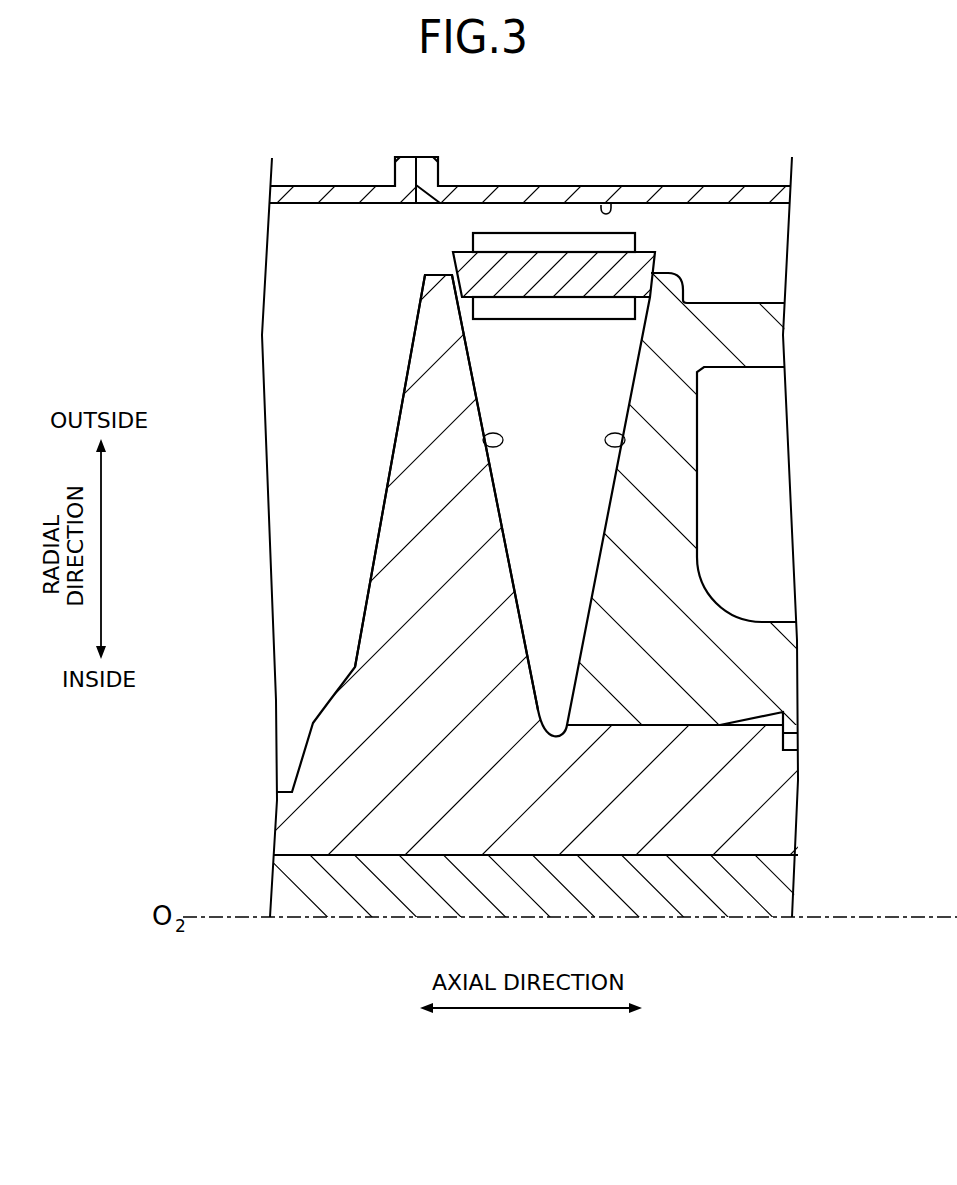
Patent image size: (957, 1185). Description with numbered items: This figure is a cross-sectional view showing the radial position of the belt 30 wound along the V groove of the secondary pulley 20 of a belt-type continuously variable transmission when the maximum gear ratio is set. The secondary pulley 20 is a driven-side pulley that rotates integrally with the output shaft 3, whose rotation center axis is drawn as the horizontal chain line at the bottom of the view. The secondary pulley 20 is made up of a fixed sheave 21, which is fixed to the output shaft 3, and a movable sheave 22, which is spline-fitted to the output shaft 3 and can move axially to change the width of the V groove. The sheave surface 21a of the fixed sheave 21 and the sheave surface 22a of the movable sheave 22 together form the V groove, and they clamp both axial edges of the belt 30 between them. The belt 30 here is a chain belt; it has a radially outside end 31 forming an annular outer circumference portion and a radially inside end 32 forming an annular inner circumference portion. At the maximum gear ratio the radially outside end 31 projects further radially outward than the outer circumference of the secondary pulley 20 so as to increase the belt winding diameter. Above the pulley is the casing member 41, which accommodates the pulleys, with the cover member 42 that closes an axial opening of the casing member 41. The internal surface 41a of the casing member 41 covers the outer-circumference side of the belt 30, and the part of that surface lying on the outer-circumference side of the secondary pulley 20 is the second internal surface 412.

The output shaft 3 is at (777, 885).
The secondary pulley 20 is at (350, 531).
The fixed sheave 21 is at (418, 292).
The sheave surface 21a is at (484, 436).
The movable sheave 22 is at (690, 288).
The sheave surface 22a is at (624, 437).
The belt 30 is at (553, 228).
The radially outside end 31 is at (507, 232).
The radially inside end 32 is at (552, 320).
The casing member 41 is at (758, 153).
The internal surface 41a is at (611, 203).
The second internal surface 412 is at (612, 159).
The cover member 42 is at (327, 184).